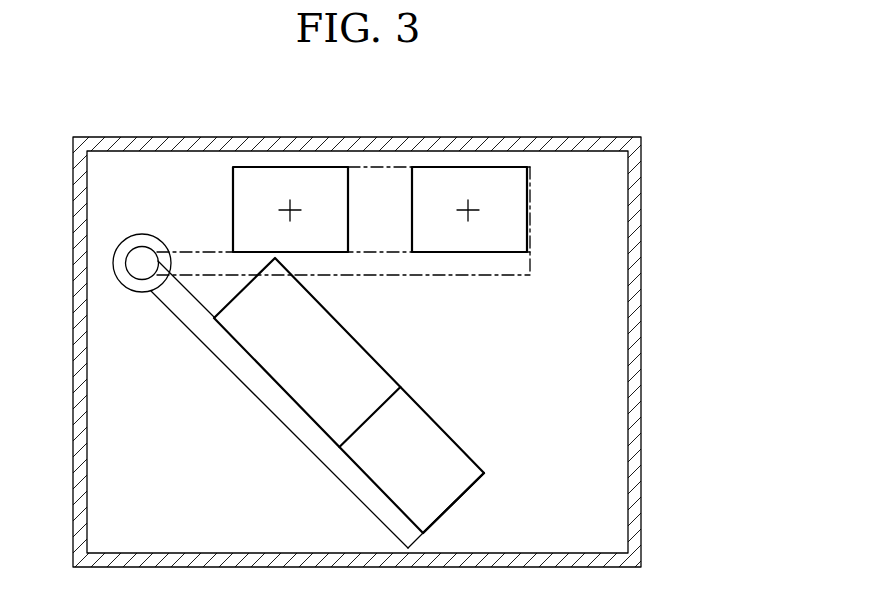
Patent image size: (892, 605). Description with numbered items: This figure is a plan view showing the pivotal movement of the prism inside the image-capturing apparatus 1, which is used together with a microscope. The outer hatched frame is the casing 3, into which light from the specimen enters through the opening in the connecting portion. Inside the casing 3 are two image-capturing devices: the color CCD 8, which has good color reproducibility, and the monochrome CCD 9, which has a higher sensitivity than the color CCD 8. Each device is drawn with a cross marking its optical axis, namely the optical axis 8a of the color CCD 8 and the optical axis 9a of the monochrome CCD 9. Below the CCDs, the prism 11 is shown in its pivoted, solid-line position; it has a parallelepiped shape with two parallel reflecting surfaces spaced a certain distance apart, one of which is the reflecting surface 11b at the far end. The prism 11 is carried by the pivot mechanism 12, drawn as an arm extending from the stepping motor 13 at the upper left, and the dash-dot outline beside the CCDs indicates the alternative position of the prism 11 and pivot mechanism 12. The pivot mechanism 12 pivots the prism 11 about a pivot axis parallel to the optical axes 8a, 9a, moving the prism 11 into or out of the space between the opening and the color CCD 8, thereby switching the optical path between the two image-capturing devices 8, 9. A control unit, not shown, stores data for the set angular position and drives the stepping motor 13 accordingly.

The image-capturing apparatus 1 is at (685, 175).
The casing 3 is at (641, 335).
The color CCD 8 is at (233, 209).
The optical axis of the color CCD 8a is at (292, 200).
The monochrome CCD 9 is at (527, 210).
The optical axis of the monochrome CCD 9a is at (468, 200).
The prism 11 is at (380, 167).
The reflecting surface 11b is at (452, 462).
The pivot mechanism 12 is at (465, 277).
The stepping motor 13 is at (142, 234).